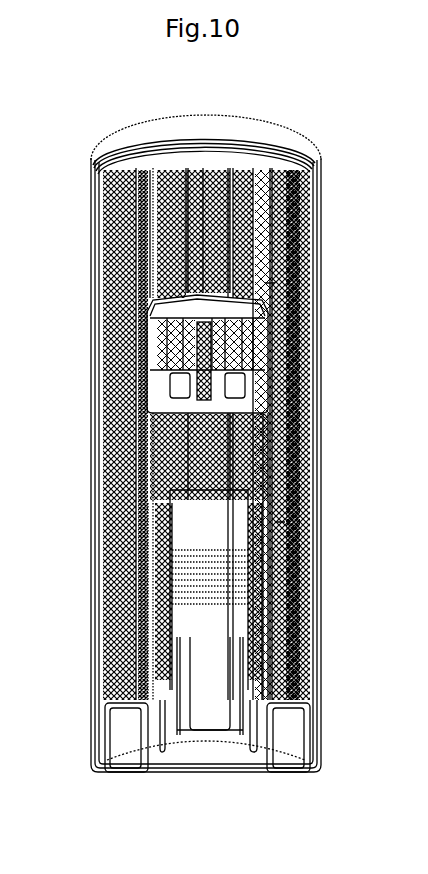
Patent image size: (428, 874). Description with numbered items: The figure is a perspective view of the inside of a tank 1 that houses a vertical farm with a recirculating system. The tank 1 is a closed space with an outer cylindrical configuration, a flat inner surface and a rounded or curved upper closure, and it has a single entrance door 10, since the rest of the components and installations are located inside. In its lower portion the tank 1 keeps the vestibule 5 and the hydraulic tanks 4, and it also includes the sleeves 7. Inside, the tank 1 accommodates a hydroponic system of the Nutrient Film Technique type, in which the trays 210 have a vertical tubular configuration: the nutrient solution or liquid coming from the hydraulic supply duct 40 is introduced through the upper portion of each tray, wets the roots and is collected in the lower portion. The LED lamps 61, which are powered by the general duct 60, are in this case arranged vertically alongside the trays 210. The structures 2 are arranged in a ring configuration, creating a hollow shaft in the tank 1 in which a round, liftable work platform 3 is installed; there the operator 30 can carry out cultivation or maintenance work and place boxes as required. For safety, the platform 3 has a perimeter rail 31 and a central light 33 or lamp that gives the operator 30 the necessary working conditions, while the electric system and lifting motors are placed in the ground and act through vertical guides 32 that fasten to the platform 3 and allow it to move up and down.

The tank 1 is at (303, 113).
The structures 2 is at (110, 338).
The work platform 3 is at (122, 438).
The hydraulic tanks 4 is at (125, 757).
The vestibule 5 is at (198, 738).
The sleeves 7 is at (202, 585).
The entrance door 10 is at (218, 698).
The operator 30 is at (222, 333).
The perimeter rail 31 is at (117, 368).
The vertical guides 32 is at (187, 157).
The central light 33 is at (125, 282).
The hydraulic supply duct 40 is at (95, 390).
The general duct 60 is at (319, 404).
The LED lamps 61 is at (268, 283).
The trays 210 is at (123, 160).